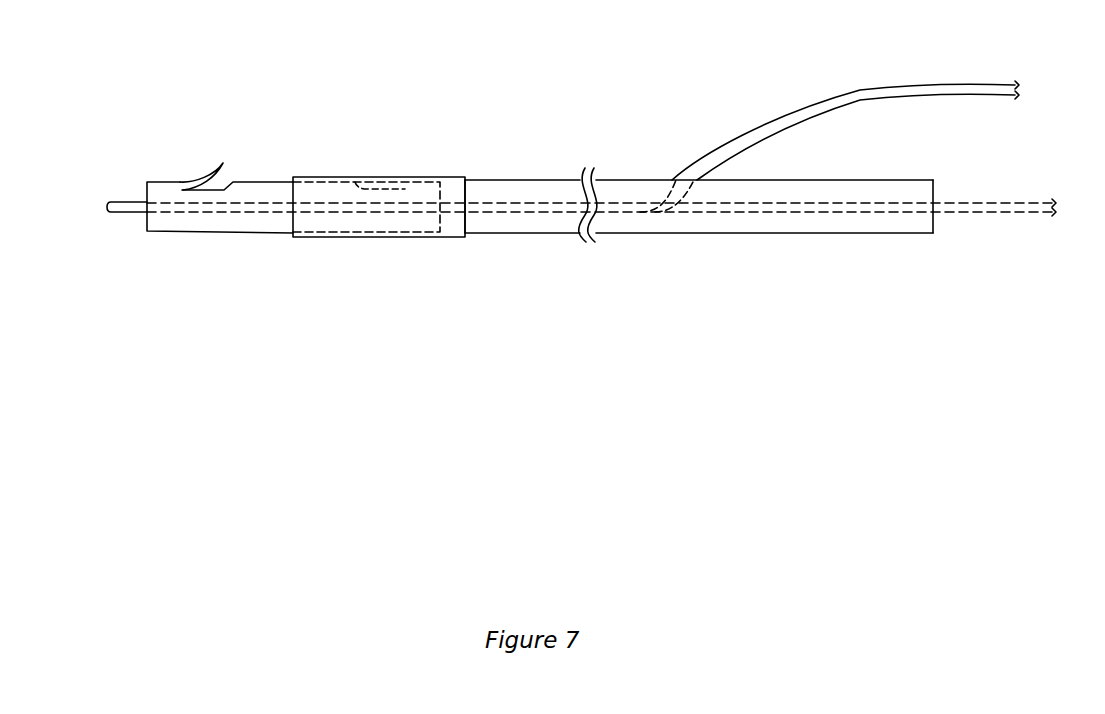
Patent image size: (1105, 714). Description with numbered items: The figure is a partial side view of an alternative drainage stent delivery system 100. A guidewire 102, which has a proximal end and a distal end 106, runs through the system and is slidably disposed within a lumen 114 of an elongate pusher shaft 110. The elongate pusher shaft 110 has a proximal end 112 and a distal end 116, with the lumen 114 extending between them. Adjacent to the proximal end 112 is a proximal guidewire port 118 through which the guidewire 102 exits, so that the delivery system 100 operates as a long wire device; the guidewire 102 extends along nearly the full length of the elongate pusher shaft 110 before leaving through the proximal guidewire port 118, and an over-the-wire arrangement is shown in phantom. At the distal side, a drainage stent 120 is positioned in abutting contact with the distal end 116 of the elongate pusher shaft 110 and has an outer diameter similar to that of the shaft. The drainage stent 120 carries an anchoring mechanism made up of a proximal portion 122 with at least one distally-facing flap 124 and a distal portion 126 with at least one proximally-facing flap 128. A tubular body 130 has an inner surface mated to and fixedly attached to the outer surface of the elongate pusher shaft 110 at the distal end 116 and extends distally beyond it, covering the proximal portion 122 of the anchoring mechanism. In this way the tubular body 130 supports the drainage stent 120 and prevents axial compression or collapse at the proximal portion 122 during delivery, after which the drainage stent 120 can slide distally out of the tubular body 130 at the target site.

The drainage stent delivery system 100 is at (527, 58).
The guidewire 102 is at (127, 200).
The distal end 106 is at (107, 212).
The elongate pusher shaft 110 is at (728, 234).
The proximal end 112 is at (931, 252).
The lumen 114 is at (493, 180).
The distal end 116 is at (468, 256).
The proximal guidewire port 118 is at (673, 182).
The drainage stent 120 is at (222, 236).
The proximal portion 122 is at (383, 141).
The distally-facing flap 124 is at (388, 183).
The distal portion 126 is at (189, 130).
The proximally-facing flap 128 is at (207, 173).
The tubular body 130 is at (378, 237).